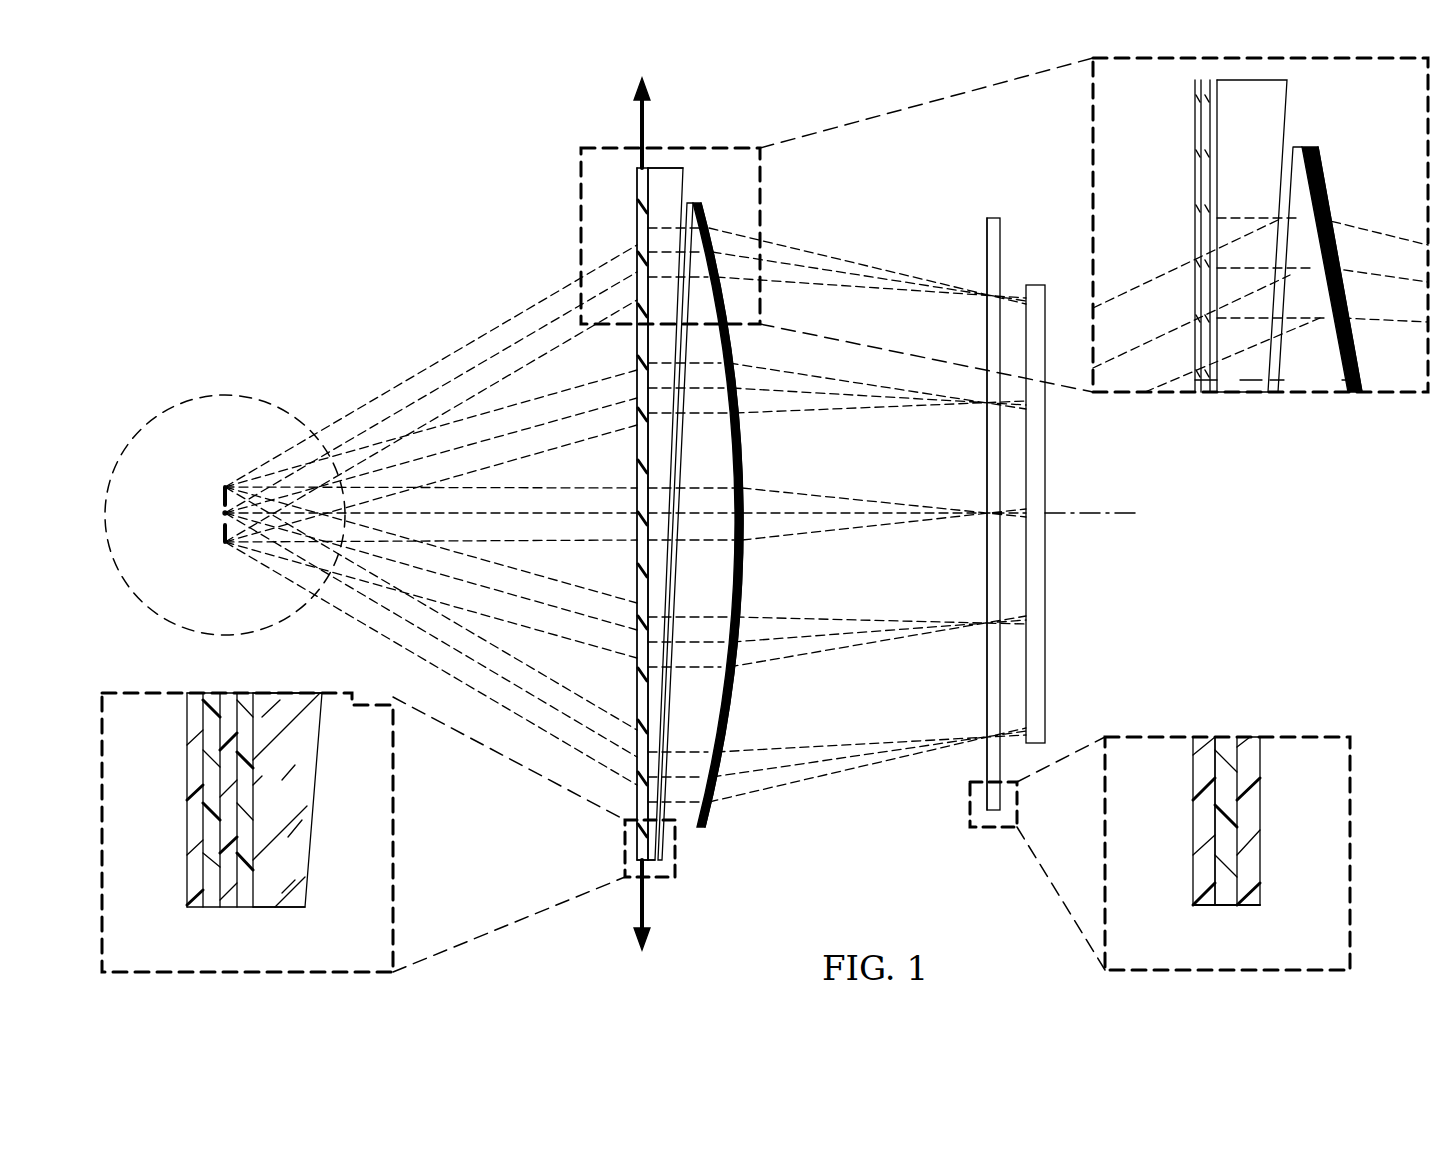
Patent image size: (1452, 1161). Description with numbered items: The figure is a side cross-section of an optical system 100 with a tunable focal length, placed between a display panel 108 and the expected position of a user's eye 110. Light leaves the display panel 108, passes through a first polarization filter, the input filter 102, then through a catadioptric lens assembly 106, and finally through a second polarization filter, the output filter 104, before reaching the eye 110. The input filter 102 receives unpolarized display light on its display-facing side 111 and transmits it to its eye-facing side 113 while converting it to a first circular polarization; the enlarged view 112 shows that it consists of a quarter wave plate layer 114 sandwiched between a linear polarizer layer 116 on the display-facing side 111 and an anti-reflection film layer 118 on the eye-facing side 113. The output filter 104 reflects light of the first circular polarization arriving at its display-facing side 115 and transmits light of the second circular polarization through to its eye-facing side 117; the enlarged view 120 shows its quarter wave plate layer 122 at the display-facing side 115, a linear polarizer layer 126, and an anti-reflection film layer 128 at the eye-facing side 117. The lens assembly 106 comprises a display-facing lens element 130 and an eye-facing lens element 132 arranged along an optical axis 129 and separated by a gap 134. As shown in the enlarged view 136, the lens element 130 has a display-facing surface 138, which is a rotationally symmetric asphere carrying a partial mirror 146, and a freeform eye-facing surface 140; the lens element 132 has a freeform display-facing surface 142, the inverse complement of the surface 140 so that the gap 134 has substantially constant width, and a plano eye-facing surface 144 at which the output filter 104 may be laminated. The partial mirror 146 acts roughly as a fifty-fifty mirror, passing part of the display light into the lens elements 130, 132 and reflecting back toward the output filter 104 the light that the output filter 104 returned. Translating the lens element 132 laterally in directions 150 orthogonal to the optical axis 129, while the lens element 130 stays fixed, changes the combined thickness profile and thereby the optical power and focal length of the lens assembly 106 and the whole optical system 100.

The optical system 100 is at (340, 130).
The first polarization filter 102 is at (984, 768).
The second polarization filter 104 is at (634, 675).
The catadioptric lens assembly 106 is at (760, 565).
The display panel 108 is at (1045, 462).
The user's eye 110 is at (225, 395).
The display-facing side 111 is at (1000, 270).
The enlarged view 112 is at (1353, 853).
The eye-facing side 113 is at (987, 240).
The quarter wave plate layer 114 is at (1228, 906).
The display-facing side 115 is at (665, 195).
The linear polarizer layer 116 is at (1250, 868).
The eye-facing side 117 is at (637, 210).
The anti-reflection film layer 118 is at (1205, 868).
The enlarged view 120 is at (397, 853).
The quarter wave plate layer 122 is at (246, 900).
The linear polarizer layer 126 is at (208, 900).
The anti-reflection film layer 128 is at (195, 823).
The optical axis 129 is at (1118, 518).
The display-facing lens element 130 is at (690, 830).
The eye-facing lens element 132 is at (670, 165).
The gap 134 is at (336, 710).
The enlarged view 136 is at (1090, 145).
The display-facing surface 138 is at (1352, 380).
The eye-facing surface 140 is at (1283, 378).
The display-facing surface 142 is at (1258, 380).
The eye-facing surface 144 is at (1212, 378).
The partial mirror 146 is at (739, 465).
The directions 150 is at (638, 118).